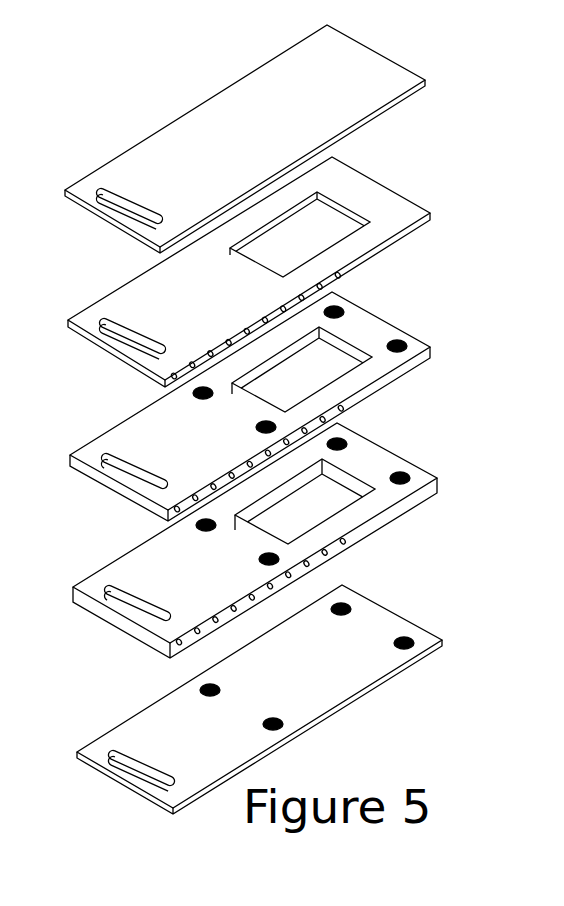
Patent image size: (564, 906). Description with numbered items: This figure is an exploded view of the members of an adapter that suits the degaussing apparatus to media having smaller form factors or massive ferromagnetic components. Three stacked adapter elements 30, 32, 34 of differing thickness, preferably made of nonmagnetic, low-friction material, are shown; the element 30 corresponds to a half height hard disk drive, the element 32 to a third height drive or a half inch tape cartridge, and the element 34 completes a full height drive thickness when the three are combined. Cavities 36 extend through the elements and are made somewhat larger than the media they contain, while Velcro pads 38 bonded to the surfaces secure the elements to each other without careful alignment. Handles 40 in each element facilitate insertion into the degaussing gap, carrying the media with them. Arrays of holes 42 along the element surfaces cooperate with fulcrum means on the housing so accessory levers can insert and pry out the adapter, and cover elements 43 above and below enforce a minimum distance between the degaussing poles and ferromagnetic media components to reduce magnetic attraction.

The cover element 43 is at (425, 82).
The cavity 36 is at (322, 218).
The adapter element 34 is at (300, 259).
The handle 40 is at (140, 347).
The adapter element 32 is at (432, 347).
The Velcro pad 38 is at (402, 472).
The adapter element 30 is at (310, 537).
The array of holes 42 is at (341, 548).